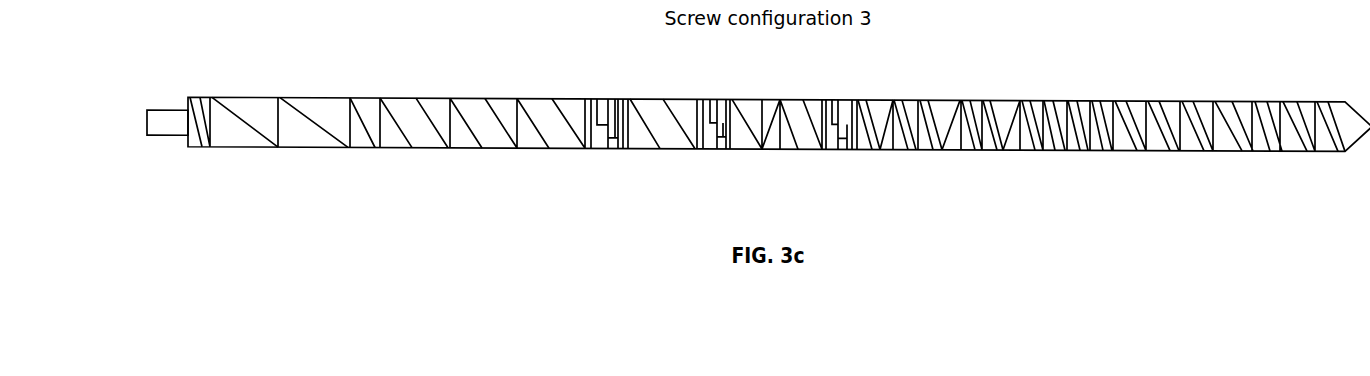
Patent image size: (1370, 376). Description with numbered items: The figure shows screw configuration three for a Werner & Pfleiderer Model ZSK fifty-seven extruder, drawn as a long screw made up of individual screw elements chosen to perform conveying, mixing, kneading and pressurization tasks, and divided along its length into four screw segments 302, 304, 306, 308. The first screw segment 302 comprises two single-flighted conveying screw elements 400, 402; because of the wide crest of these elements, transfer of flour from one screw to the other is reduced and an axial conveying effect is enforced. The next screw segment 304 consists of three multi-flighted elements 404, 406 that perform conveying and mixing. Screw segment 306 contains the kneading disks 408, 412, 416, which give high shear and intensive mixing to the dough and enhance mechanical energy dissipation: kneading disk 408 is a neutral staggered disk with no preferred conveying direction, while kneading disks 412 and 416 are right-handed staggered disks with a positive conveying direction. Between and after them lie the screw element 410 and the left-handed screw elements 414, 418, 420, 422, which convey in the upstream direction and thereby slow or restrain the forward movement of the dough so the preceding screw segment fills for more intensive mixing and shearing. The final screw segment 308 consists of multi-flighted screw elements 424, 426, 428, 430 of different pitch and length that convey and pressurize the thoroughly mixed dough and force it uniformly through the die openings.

The screw segment 302 is at (208, 152).
The screw segment 304 is at (358, 152).
The screw segment 306 is at (593, 152).
The screw segment 308 is at (1043, 152).
The screw element 400 is at (200, 92).
The screw element 402 is at (255, 92).
The screw element 404 is at (363, 92).
The screw element 406 is at (428, 92).
The kneading disk 408 is at (610, 92).
The screw element 410 is at (663, 92).
The kneading disk 412 is at (716, 92).
The left-handed screw element 414 is at (770, 92).
The kneading disk 416 is at (842, 92).
The left-handed screw element 418 is at (887, 92).
The left-handed screw element 420 is at (950, 92).
The left-handed screw element 422 is at (1012, 92).
The screw element 424 is at (1077, 92).
The screw element 426 is at (1129, 92).
The screw element 428 is at (1199, 92).
The screw tip element 430 is at (1302, 92).